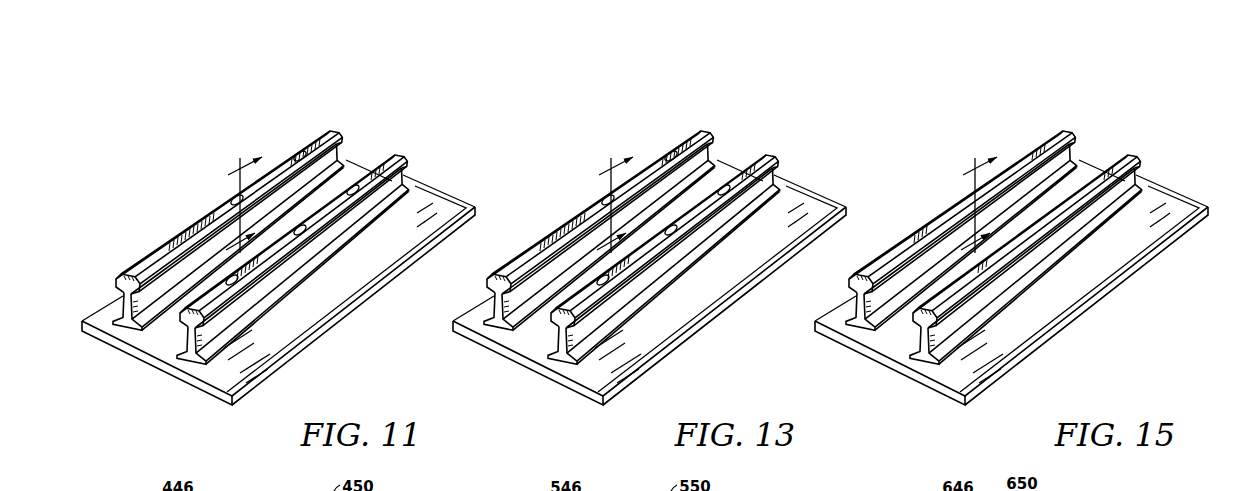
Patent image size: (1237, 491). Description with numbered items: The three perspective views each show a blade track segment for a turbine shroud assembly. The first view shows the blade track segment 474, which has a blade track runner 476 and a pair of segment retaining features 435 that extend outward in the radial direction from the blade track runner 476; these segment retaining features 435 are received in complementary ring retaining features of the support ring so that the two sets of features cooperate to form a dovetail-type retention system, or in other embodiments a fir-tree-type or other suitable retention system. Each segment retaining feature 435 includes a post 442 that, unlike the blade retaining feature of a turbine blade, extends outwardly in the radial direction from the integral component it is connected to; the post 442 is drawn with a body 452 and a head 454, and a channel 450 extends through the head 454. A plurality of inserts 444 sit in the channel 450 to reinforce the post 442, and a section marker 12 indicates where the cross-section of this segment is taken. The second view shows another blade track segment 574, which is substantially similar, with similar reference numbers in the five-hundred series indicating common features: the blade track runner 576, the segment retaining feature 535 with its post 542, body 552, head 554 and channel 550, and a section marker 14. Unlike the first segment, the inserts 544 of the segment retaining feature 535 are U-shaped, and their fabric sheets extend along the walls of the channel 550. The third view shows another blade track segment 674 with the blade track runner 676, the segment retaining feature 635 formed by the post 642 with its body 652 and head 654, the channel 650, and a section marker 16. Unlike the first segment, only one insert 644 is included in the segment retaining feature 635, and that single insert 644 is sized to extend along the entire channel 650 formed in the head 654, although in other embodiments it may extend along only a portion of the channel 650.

In FIG. 11, the segment retaining feature 435 is at (278, 255).
In FIG. 11, the post 442 is at (278, 294).
In FIG. 11, the ridge 444 is at (360, 123).
In FIG. 11, the channel 450 is at (303, 152).
In FIG. 11, the foot 452 is at (131, 339).
In FIG. 11, the head 454 is at (117, 272).
In FIG. 11, the blade track segment 474 is at (290, 255).
In FIG. 11, the blade track runner 476 is at (327, 325).
In FIG. 11, the section line 12- 12 is at (232, 216).
In FIG. 13, the segment retaining feature 535 is at (632, 255).
In FIG. 13, the base plate 542 is at (631, 282).
In FIG. 13, the inserts 544 is at (673, 255).
In FIG. 13, the top surface 550 is at (658, 209).
In FIG. 13, the foot 552 is at (623, 291).
In FIG. 13, the head 554 is at (597, 281).
In FIG. 13, the blade track segment 574 is at (645, 255).
In FIG. 13, the edge lip 576 is at (717, 289).
In FIG. 13, the section line 14- 14 is at (603, 216).
In FIG. 15, the segment retaining feature 635 is at (984, 256).
In FIG. 15, the base plate 642 is at (1000, 292).
In FIG. 15, the insert 644 is at (1052, 229).
In FIG. 15, the channel 650 is at (1026, 202).
In FIG. 15, the foot 652 is at (986, 292).
In FIG. 15, the head 654 is at (957, 281).
In FIG. 15, the blade track segment 674 is at (991, 256).
In FIG. 15, the edge lip 676 is at (1079, 289).
In FIG. 15, the section line 16- 16 is at (966, 214).